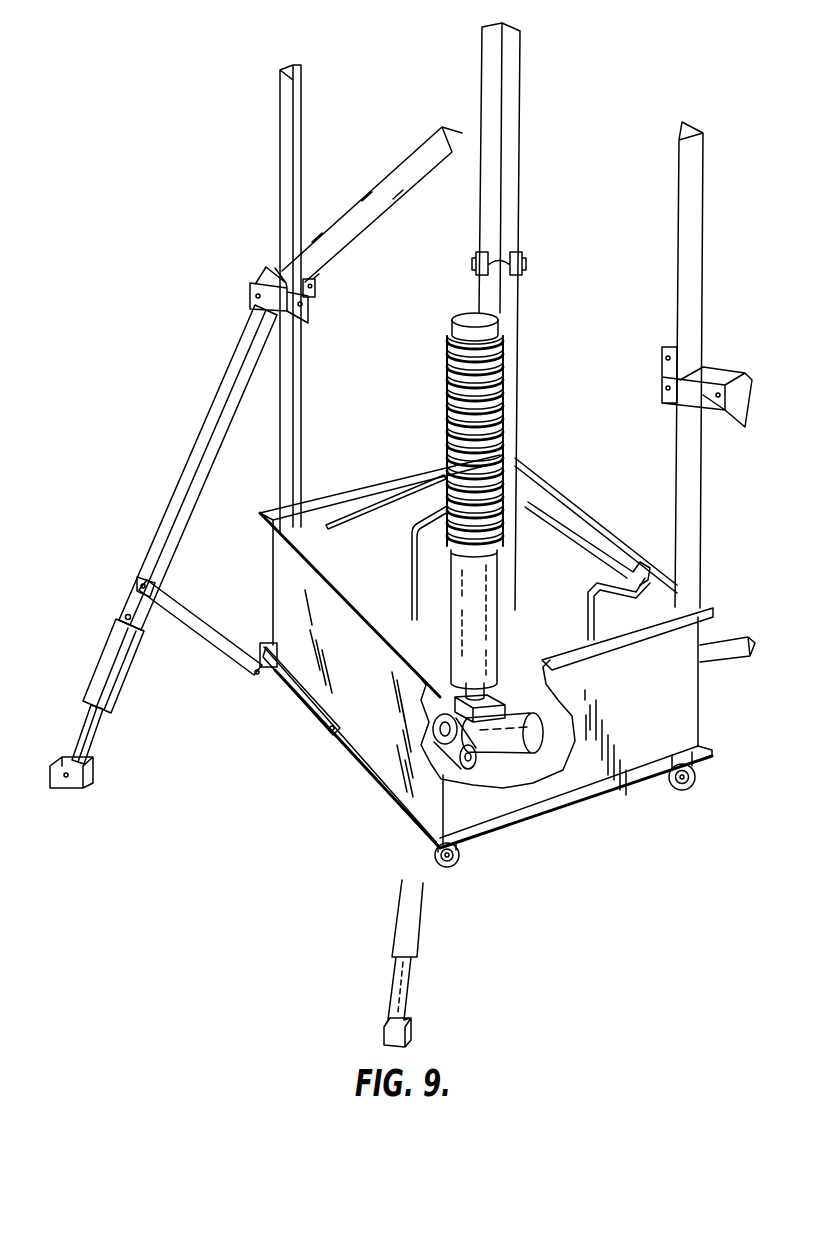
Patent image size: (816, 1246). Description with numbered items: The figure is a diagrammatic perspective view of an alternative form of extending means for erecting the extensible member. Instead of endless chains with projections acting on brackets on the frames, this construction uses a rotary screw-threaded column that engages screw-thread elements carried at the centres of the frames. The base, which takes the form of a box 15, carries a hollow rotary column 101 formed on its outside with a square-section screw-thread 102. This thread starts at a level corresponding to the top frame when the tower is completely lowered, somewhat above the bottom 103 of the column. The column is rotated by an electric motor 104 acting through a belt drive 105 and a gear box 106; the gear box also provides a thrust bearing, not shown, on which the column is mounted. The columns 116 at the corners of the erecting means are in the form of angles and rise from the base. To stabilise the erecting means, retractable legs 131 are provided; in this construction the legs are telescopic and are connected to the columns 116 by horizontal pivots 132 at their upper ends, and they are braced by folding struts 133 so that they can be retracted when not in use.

The box 15 is at (375, 743).
The hollow rotary column 101 is at (486, 584).
The square-section screw-thread 102 is at (503, 384).
The bottom of the column 103 is at (456, 697).
The electric motor 104 is at (452, 791).
The belt drive 105 is at (436, 722).
The gear box 106 is at (438, 712).
The columns 116 is at (287, 189).
The legs 131 is at (218, 369).
The horizontal pivots 132 is at (257, 295).
The folding struts 133 is at (262, 676).